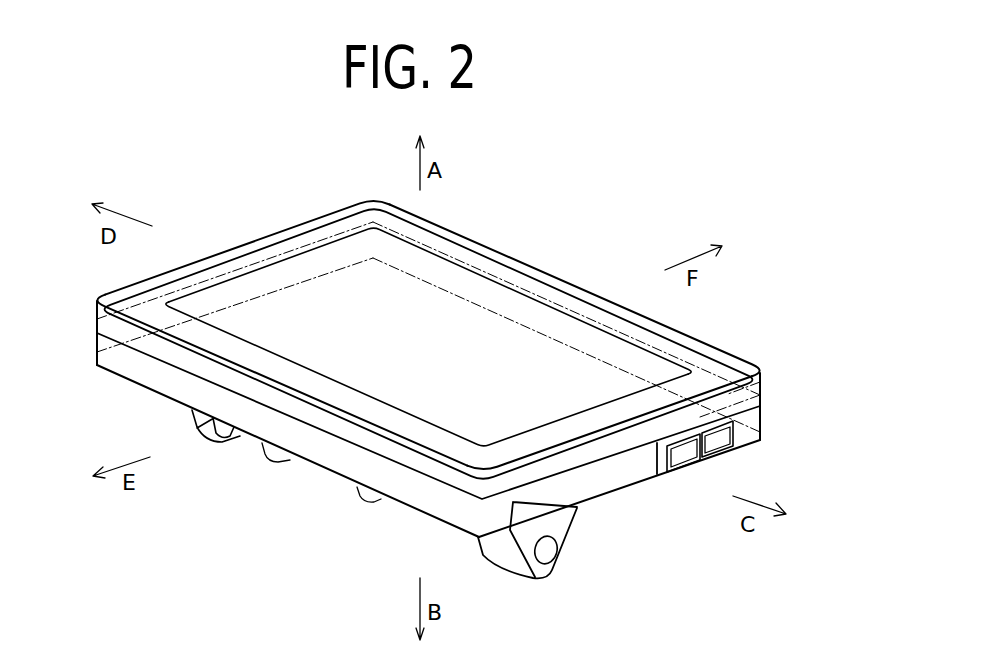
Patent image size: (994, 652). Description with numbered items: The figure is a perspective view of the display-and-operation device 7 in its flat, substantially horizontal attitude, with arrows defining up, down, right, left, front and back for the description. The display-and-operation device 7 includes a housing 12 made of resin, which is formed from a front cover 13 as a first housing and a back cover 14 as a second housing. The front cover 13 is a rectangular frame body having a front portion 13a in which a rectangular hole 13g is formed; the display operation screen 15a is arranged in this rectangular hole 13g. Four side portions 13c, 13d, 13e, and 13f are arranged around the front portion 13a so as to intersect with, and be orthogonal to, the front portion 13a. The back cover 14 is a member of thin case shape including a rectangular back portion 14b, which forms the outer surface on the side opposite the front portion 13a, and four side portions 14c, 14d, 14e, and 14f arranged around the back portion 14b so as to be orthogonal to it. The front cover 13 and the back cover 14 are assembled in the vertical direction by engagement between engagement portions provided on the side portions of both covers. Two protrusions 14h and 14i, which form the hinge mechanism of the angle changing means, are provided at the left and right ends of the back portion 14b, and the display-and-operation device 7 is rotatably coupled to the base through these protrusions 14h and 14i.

The display-and-operation device 7 is at (540, 225).
The housing 12 is at (257, 490).
The front cover 13 is at (319, 433).
The front portion 13a is at (455, 252).
The side portion 13c is at (577, 458).
The side portion 13d is at (266, 245).
The side portion 13e is at (170, 360).
The side portion 13f is at (653, 333).
The rectangular hole 13g is at (580, 331).
The back cover 14 is at (353, 475).
The back portion 14b is at (457, 412).
The side portion 14c is at (630, 472).
The side portion 14d is at (212, 290).
The side portion 14e is at (405, 492).
The side portion 14f is at (720, 352).
The protrusion 14h is at (550, 567).
The protrusion 14i is at (199, 437).
The display operation screen 15a is at (358, 285).